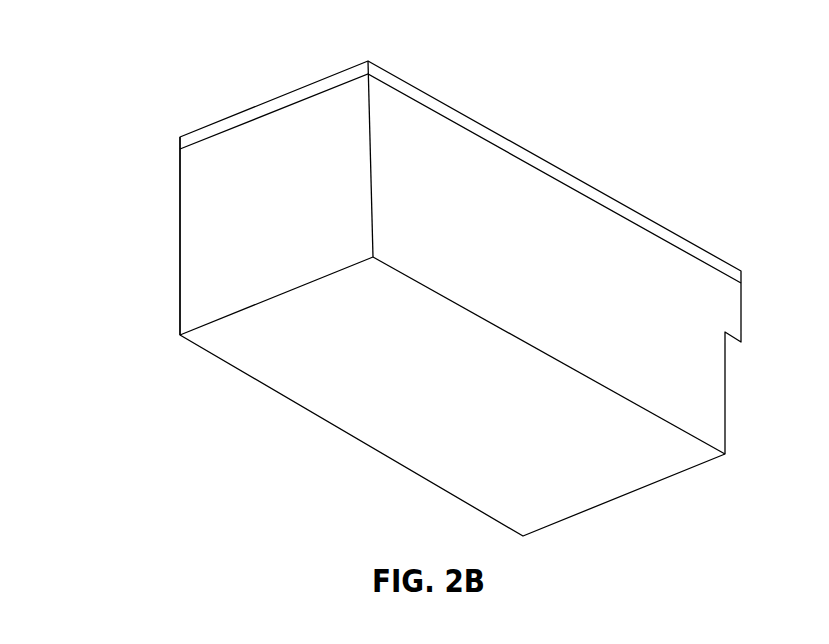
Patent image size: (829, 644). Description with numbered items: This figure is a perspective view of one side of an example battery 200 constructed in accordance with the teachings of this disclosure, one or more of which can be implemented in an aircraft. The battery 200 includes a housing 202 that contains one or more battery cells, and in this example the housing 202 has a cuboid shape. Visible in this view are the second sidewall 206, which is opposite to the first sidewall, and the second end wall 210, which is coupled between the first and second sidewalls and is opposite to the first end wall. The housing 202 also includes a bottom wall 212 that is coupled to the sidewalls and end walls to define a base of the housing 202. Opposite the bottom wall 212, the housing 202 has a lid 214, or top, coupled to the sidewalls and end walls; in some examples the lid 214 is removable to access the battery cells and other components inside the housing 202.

The battery 200 is at (136, 84).
The housing 202 is at (318, 125).
The second sidewall 206 is at (498, 205).
The second end wall 210 is at (263, 150).
The bottom wall 212 is at (272, 373).
The lid 214 is at (441, 103).